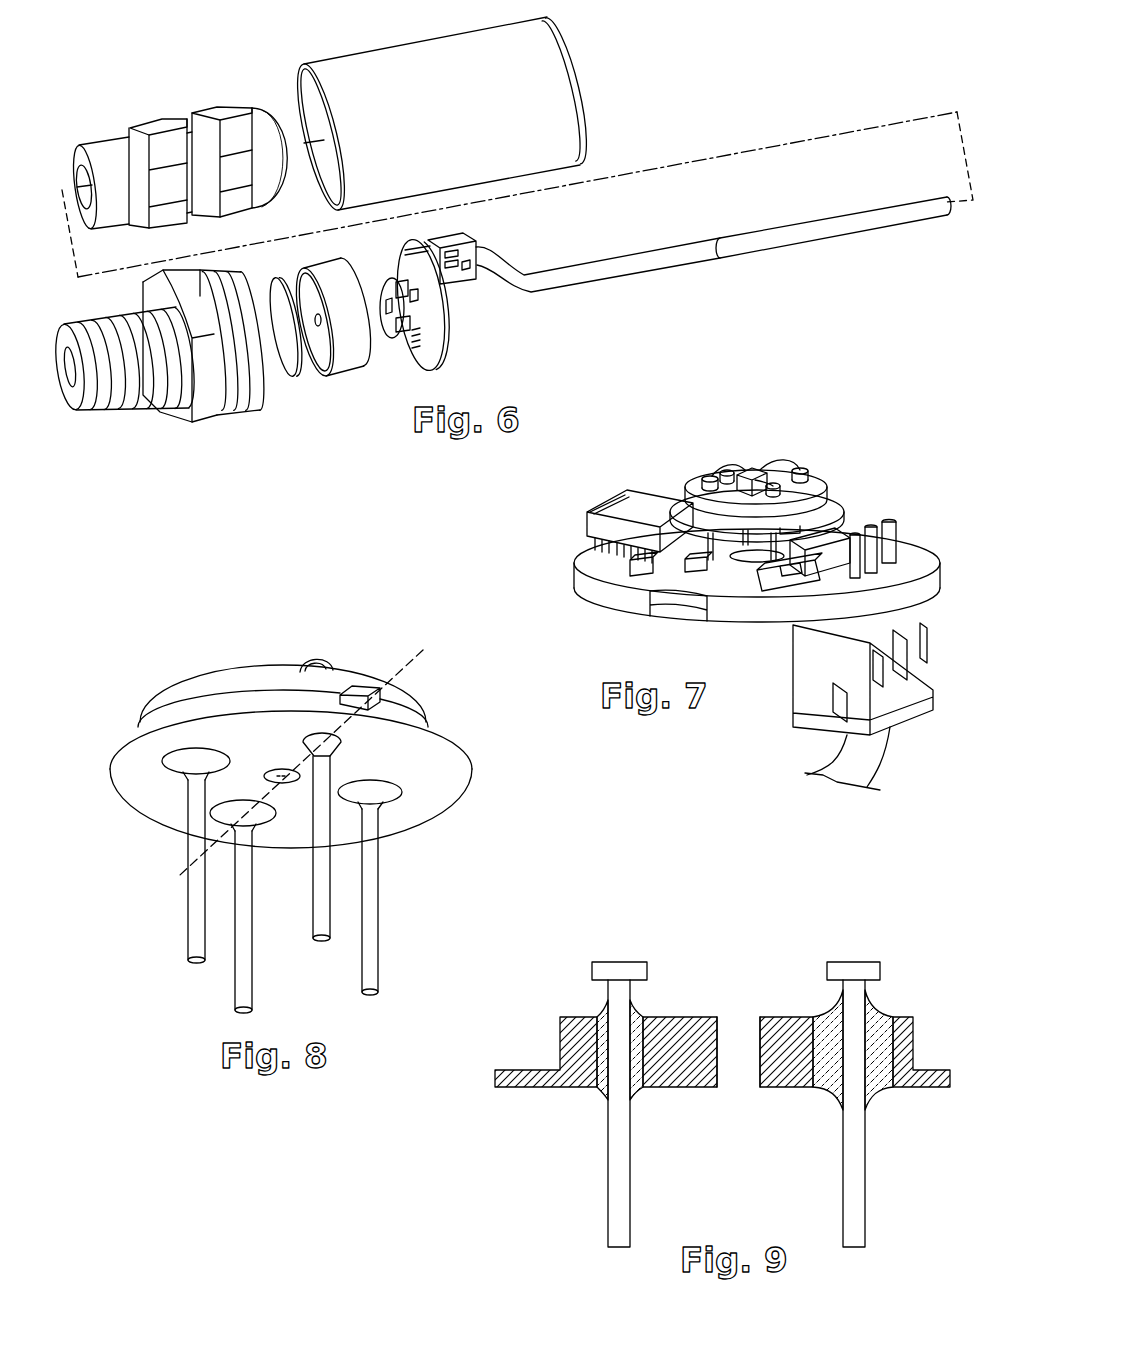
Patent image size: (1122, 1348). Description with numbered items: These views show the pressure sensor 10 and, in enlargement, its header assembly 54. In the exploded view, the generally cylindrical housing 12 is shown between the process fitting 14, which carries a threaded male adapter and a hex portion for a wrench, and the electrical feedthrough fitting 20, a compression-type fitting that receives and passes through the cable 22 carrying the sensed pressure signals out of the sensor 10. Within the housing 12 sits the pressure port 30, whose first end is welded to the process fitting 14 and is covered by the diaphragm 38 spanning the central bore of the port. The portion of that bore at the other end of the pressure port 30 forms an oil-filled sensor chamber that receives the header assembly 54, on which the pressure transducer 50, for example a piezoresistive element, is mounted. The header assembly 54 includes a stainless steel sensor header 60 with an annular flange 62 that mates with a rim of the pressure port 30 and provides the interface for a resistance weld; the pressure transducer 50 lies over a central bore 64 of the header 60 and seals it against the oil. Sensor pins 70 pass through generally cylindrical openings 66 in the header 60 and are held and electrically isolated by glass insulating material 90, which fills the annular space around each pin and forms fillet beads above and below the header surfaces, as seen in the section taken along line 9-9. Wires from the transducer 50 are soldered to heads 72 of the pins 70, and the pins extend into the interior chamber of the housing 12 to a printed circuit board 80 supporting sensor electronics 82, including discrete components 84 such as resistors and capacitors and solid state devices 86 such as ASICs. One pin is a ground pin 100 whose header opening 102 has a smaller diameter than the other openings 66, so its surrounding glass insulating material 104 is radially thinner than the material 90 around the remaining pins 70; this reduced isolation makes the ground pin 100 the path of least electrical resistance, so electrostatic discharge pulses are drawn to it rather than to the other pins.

In FIG. 6, the pressure sensor 10 is at (196, 86).
In FIG. 6, the housing 12 is at (415, 82).
In FIG. 6, the process fitting 14 is at (207, 385).
In FIG. 6, the electrical feedthrough fitting 20 is at (158, 152).
In FIG. 6, the cable 22 is at (593, 270).
In FIG. 7, the cable 22 is at (858, 757).
In FIG. 6, the pressure port 30 is at (350, 347).
In FIG. 6, the diaphragm 38 is at (288, 355).
In FIG. 7, the pressure transducer 50 is at (758, 468).
In FIG. 6, the header assembly 54 is at (430, 337).
In FIG. 7, the header assembly 54 is at (777, 447).
In FIG. 8, the header assembly 54 is at (303, 630).
In FIG. 8, the sensor header 60 is at (260, 683).
In FIG. 9, the sensor header 60 is at (580, 1040).
In FIG. 8, the annular flange 62 is at (135, 733).
In FIG. 9, the annular flange 62 is at (532, 1080).
In FIG. 8, the central bore 64 is at (290, 783).
In FIG. 9, the central bore 64 is at (740, 1037).
In FIG. 9, the openings 66 is at (817, 1093).
In FIG. 8, the sensor pins 70 is at (197, 930).
In FIG. 9, the sensor pins 70 is at (618, 1133).
In FIG. 9, the heads 72 is at (620, 968).
In FIG. 6, the printed circuit board 80 is at (437, 297).
In FIG. 7, the printed circuit board 80 is at (623, 600).
In FIG. 7, the sensor electronics 82 is at (694, 466).
In FIG. 7, the discrete components 84 is at (787, 584).
In FIG. 7, the solid state devices 86 is at (647, 503).
In FIG. 8, the glass insulating material 90 is at (340, 747).
In FIG. 9, the glass insulating material 90 is at (600, 1090).
In FIG. 8, the ground pin 100 is at (327, 910).
In FIG. 9, the ground pin 100 is at (618, 1217).
In FIG. 9, the sensor header opening 102 is at (643, 1010).
In FIG. 8, the glass insulating material 104 is at (378, 707).
In FIG. 9, the glass insulating material 104 is at (605, 1027).
In FIG. 8, the section line 9 is at (423, 650).